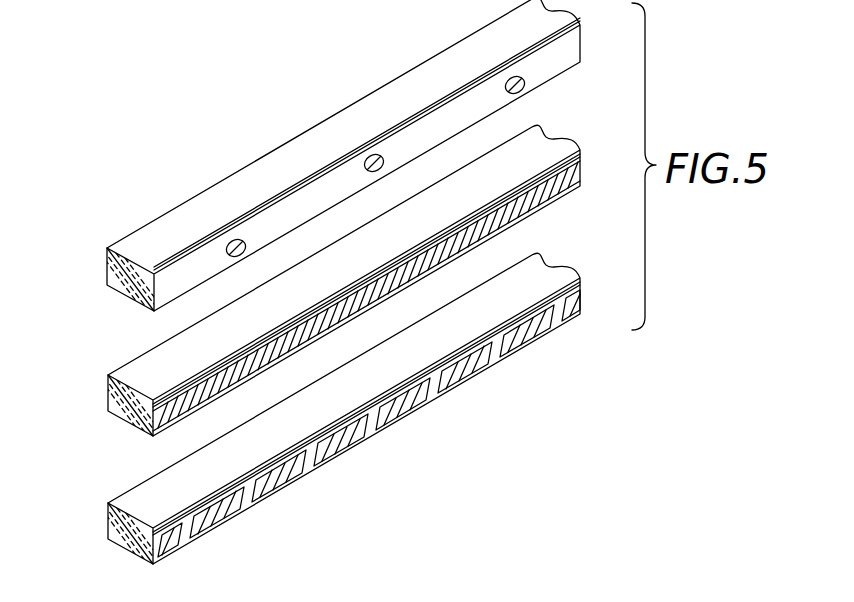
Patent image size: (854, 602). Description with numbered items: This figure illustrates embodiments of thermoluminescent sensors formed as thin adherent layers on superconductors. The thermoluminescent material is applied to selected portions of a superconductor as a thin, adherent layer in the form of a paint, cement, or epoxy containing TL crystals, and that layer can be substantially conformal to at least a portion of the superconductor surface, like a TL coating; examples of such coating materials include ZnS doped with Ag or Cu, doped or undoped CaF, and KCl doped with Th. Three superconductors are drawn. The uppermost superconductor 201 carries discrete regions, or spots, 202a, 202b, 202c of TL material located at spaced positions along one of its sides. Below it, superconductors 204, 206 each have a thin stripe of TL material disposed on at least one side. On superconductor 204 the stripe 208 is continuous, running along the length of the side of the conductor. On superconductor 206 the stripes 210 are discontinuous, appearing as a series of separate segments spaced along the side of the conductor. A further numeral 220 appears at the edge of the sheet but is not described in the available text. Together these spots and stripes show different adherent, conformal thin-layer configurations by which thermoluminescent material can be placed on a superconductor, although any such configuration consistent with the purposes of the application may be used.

The superconductor 201 is at (138, 238).
The discrete region of TL material 202a is at (233, 239).
The discrete region of TL material 202b is at (371, 154).
The discrete region of TL material 202c is at (524, 89).
The superconductor 204 is at (344, 285).
The superconductor 206 is at (340, 417).
The stripe of TL material 208 is at (562, 198).
The stripes of TL material 210 is at (484, 379).
The reference numeral 220 is at (819, 591).